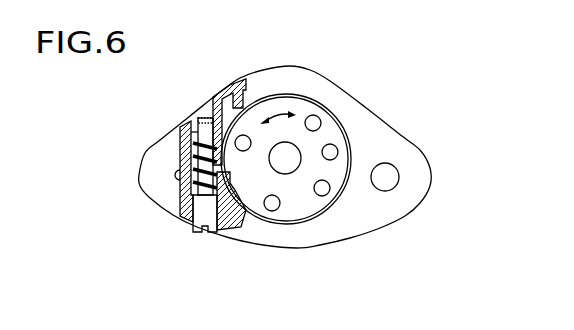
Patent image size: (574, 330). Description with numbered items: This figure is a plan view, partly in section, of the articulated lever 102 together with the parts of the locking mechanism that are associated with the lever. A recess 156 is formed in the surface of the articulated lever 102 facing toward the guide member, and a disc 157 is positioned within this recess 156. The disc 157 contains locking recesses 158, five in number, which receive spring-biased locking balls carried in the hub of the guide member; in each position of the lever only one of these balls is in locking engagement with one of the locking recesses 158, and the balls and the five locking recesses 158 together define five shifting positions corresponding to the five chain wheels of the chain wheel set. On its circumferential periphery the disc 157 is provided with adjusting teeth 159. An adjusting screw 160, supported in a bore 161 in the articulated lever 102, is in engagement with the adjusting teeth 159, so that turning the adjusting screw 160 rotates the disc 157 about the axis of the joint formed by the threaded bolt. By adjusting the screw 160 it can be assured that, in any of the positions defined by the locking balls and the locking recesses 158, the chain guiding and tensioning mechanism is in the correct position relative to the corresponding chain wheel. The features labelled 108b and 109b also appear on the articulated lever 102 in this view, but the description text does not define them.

The articulated lever 102 is at (403, 136).
The detent ball 108b is at (172, 176).
The mounting hole 109b is at (398, 180).
The recess 156 is at (319, 100).
The disc 157 is at (344, 180).
The locking recesses 158 is at (334, 152).
The adjusting teeth 159 is at (224, 226).
The adjusting screw 160 is at (186, 206).
The bore 161 is at (196, 122).